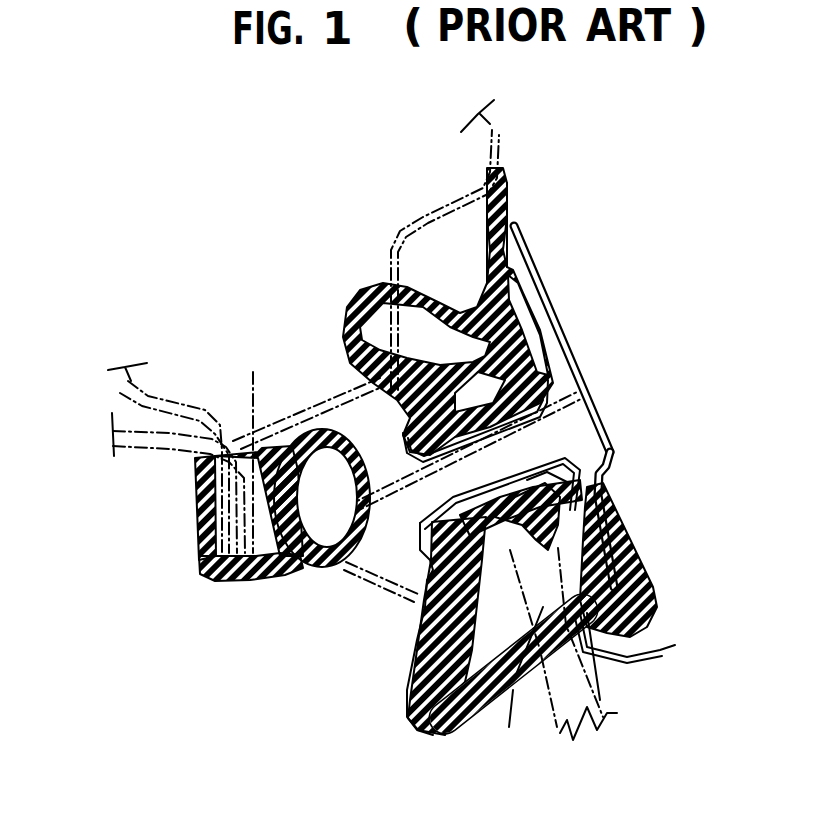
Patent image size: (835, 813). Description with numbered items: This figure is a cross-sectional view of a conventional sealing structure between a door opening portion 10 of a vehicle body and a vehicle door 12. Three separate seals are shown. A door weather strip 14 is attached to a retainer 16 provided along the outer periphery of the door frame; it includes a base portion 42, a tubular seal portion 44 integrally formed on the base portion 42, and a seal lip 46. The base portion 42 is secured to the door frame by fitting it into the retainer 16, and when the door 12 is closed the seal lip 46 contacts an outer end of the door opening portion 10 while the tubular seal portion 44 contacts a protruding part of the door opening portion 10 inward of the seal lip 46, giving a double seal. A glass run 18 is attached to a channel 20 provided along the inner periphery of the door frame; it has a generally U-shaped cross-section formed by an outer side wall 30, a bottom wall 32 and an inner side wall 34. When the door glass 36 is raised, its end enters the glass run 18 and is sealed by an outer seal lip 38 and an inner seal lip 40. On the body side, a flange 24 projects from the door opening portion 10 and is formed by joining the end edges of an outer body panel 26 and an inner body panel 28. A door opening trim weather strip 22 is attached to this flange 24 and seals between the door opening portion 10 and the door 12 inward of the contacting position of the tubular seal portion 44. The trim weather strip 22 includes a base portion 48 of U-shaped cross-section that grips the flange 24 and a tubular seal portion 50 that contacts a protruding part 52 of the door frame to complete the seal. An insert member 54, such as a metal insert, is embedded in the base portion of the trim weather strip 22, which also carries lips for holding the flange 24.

The door opening portion 10 is at (317, 413).
The vehicle door 12 is at (630, 406).
The door weather strip 14 is at (466, 296).
The retainer 16 is at (570, 333).
The glass run 18 is at (560, 571).
The channel 20 is at (565, 440).
The door opening trim weather strip 22 is at (211, 563).
The flange 24 is at (253, 372).
The outer body panel 26 is at (423, 230).
The inner body panel 28 is at (170, 449).
The outer side wall 30 is at (615, 540).
The bottom wall 32 is at (560, 487).
The inner side wall 34 is at (412, 673).
The door glass 36 is at (593, 692).
The outer seal lip 38 is at (574, 640).
The inner seal lip 40 is at (509, 727).
The base portion 42 is at (545, 305).
The tubular seal portion 44 is at (343, 323).
The seal lip 46 is at (498, 190).
The base portion 48 is at (205, 572).
The tubular seal portion 50 is at (320, 568).
The protruding part 52 is at (393, 583).
The insert member 54 is at (205, 547).